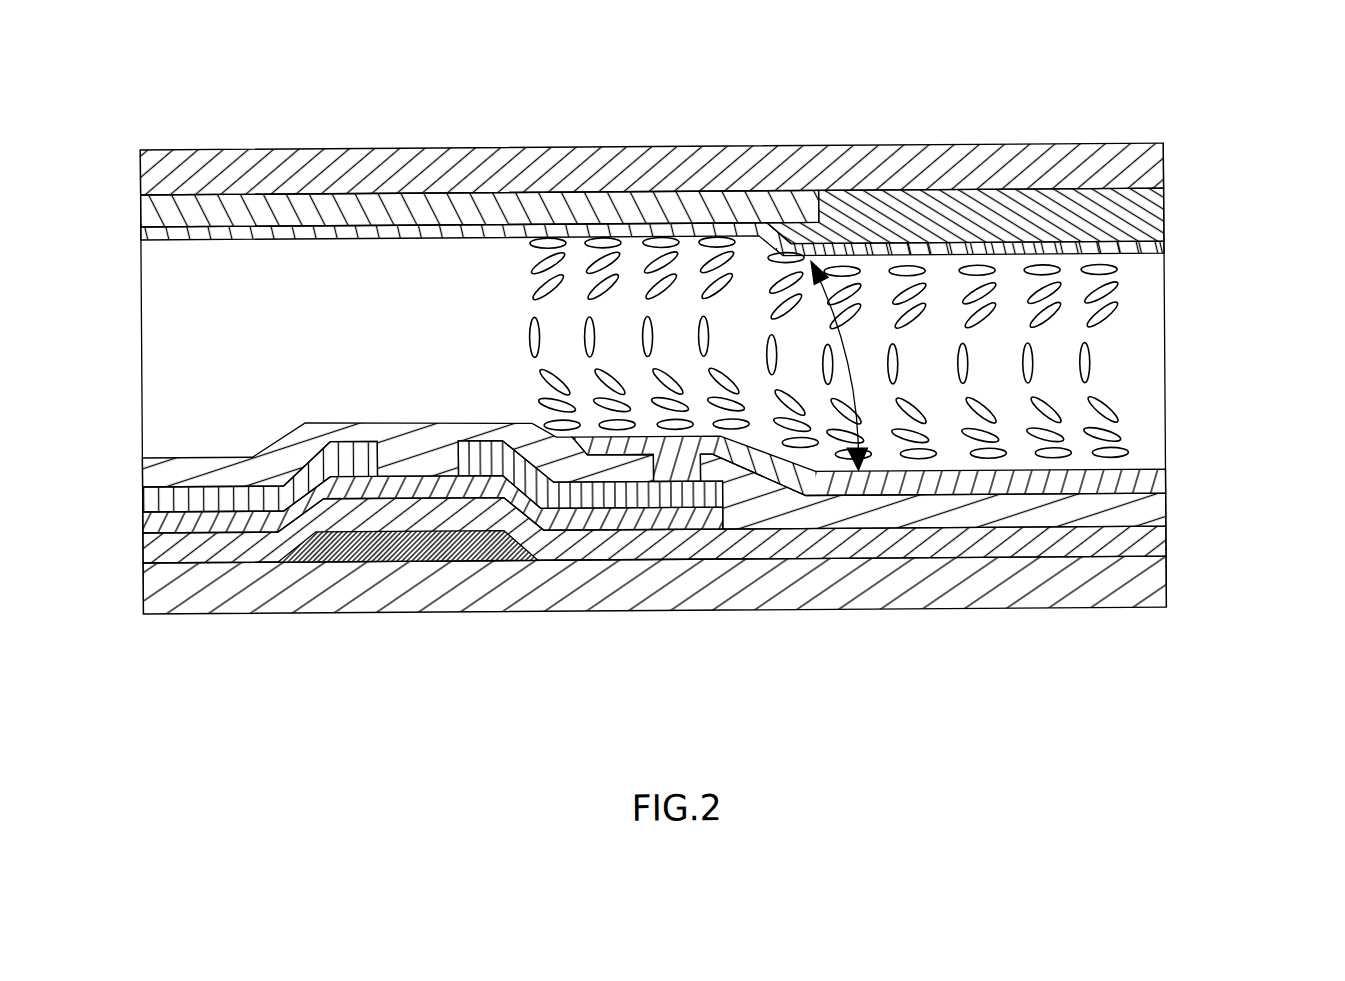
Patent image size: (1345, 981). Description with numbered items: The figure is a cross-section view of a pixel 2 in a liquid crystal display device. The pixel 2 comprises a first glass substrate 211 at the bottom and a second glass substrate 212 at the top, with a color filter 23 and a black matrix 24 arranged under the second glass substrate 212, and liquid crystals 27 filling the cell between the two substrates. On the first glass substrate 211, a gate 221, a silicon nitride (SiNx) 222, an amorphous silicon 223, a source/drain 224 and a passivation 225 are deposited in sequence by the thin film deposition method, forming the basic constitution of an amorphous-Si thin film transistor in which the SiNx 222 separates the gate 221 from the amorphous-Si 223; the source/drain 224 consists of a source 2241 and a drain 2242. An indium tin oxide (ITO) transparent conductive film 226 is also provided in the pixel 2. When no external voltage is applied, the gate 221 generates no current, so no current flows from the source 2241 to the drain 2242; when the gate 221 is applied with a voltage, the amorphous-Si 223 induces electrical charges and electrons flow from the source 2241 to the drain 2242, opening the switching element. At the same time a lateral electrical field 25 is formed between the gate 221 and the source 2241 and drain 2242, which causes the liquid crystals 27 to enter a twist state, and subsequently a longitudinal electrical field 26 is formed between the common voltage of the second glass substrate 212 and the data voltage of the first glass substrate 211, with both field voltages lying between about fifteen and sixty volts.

The pixel 2 is at (247, 46).
The first glass substrate 211 is at (482, 610).
The second glass substrate 212 is at (1165, 159).
The gate 221 is at (504, 558).
The silicon nitride (SiNx) 222 is at (664, 557).
The amorphous silicon 223 is at (704, 526).
The source/drain 224 is at (509, 601).
The source 2241 is at (478, 457).
The drain 2242 is at (353, 466).
The passivation 225 is at (957, 516).
The indium tin oxide (ITO) transparent conductive film 226 is at (1165, 253).
The color filter 23 is at (1165, 222).
The black matrix 24 is at (161, 207).
The lateral electrical field 25 is at (497, 560).
The longitudinal electrical field 26 is at (848, 347).
The liquid crystals 27 is at (1130, 364).